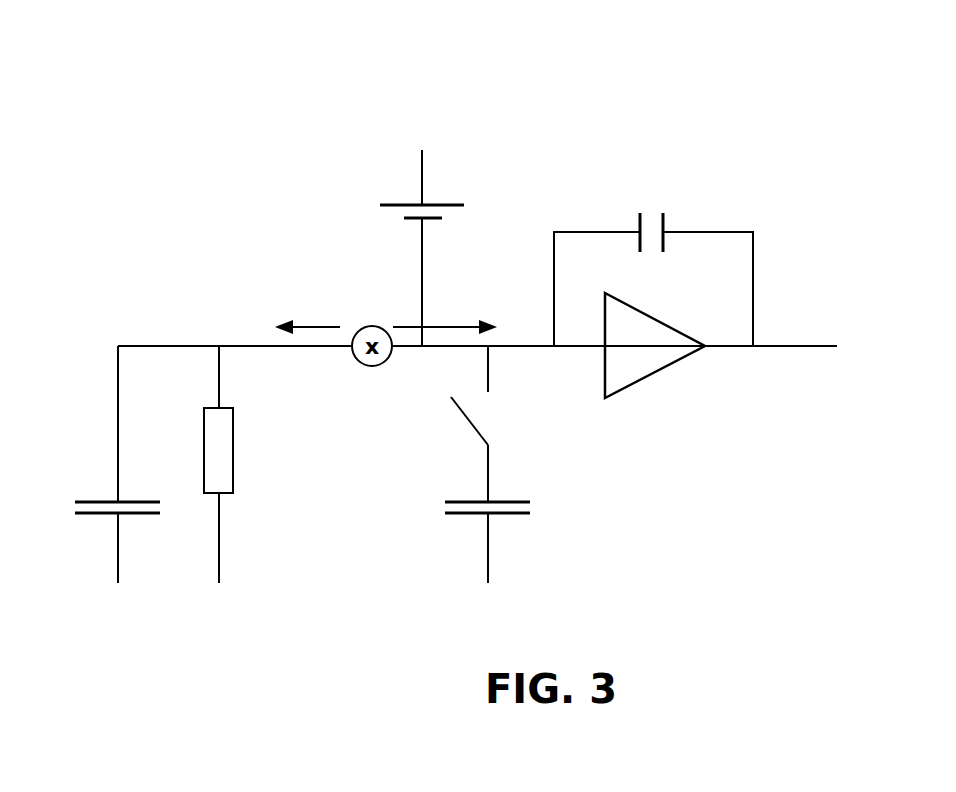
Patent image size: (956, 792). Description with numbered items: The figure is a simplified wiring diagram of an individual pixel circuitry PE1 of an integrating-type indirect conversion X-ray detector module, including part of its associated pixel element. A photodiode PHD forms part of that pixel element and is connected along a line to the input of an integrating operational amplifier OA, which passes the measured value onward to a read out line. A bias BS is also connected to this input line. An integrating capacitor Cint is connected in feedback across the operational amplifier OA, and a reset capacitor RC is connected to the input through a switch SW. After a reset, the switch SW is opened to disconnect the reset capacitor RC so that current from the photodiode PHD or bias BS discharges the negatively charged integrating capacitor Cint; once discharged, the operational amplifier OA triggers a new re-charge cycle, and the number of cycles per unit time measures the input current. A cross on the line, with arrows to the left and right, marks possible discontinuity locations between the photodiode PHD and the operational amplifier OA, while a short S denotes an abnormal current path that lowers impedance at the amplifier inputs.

The pixel circuitry PE1 is at (720, 110).
The photodiode PHD is at (95, 464).
The short S is at (240, 464).
The bias BS is at (422, 248).
The switch SW is at (494, 424).
The reset capacitor RC is at (483, 542).
The operational amplifier OA is at (652, 353).
The integrating capacitor Cint is at (653, 268).